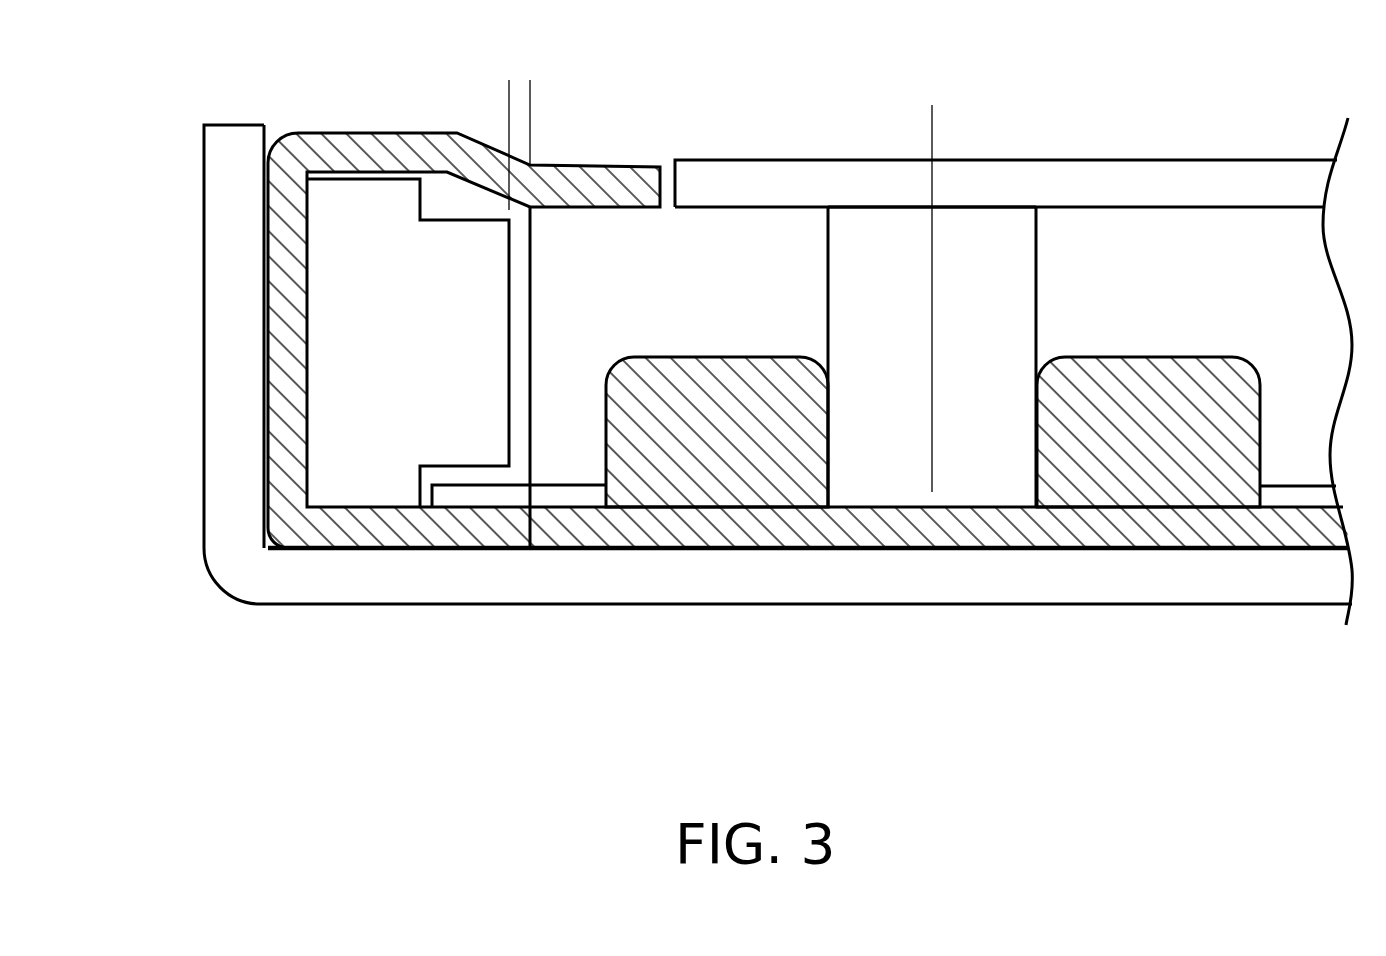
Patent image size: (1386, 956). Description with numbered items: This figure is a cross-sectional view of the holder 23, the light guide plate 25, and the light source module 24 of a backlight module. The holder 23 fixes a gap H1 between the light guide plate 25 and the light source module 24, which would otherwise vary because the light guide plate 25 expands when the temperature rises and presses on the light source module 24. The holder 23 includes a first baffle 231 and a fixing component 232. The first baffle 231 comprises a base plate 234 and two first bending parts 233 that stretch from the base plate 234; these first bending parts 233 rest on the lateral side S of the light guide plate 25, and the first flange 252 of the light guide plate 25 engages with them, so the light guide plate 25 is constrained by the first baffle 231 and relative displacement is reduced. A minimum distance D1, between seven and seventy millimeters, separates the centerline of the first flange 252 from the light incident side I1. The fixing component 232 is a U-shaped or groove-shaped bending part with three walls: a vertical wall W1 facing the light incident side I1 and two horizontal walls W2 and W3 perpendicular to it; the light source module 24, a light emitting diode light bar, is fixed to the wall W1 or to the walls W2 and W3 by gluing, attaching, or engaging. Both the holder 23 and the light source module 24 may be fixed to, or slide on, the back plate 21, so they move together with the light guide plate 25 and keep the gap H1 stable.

The back plate 21 is at (528, 580).
The holder 23 is at (721, 389).
The fixing component 232 is at (278, 360).
The light source module 24 is at (364, 442).
The first bending parts 233 is at (728, 483).
The base plate 234 is at (1040, 538).
The first baffle 231 is at (678, 680).
The light guide plate 25 is at (1137, 234).
The first flange 252 is at (990, 232).
The vertical wall W1 is at (303, 410).
The horizontal wall W2 is at (398, 172).
The horizontal wall W3 is at (389, 508).
The gap H1 is at (465, 95).
The minimum distance D1 is at (932, 125).
The light incident side I1 is at (531, 315).
The lateral side S is at (688, 318).